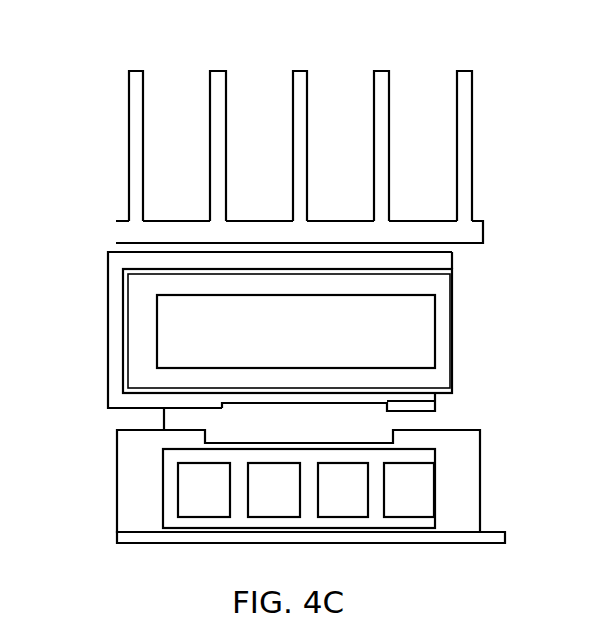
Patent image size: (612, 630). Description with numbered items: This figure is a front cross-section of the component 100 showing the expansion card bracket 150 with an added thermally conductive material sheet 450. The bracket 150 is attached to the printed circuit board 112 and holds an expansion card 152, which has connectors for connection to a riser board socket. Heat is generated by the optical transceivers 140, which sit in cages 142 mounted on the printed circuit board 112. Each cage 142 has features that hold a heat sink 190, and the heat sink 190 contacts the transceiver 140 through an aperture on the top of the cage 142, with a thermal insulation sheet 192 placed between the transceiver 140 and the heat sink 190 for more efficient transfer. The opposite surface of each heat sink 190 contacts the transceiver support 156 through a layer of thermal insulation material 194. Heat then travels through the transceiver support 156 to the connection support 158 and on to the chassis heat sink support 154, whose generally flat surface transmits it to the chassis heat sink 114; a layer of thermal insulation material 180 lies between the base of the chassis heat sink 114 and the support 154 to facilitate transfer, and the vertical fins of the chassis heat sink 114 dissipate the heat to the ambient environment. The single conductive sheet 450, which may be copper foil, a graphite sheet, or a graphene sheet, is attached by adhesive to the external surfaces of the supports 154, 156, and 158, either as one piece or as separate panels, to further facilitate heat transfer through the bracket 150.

The component 100 is at (90, 52).
The chassis heat sink 114 is at (466, 104).
The thermal insulation material 180 is at (392, 245).
The thermally conductive material sheet 450 is at (157, 262).
The connection support 158 is at (108, 291).
The chassis heat sink support 154 is at (452, 258).
The expansion card bracket 150 is at (453, 271).
The expansion card 152 is at (422, 313).
The transceiver support 156 is at (452, 393).
The thermal insulation material 194 is at (372, 386).
The heat sink 190 is at (180, 422).
The thermal insulation sheet 192 is at (393, 443).
The cage 142 is at (128, 507).
The optical transceiver 140 is at (205, 518).
The printed circuit board 112 is at (507, 537).